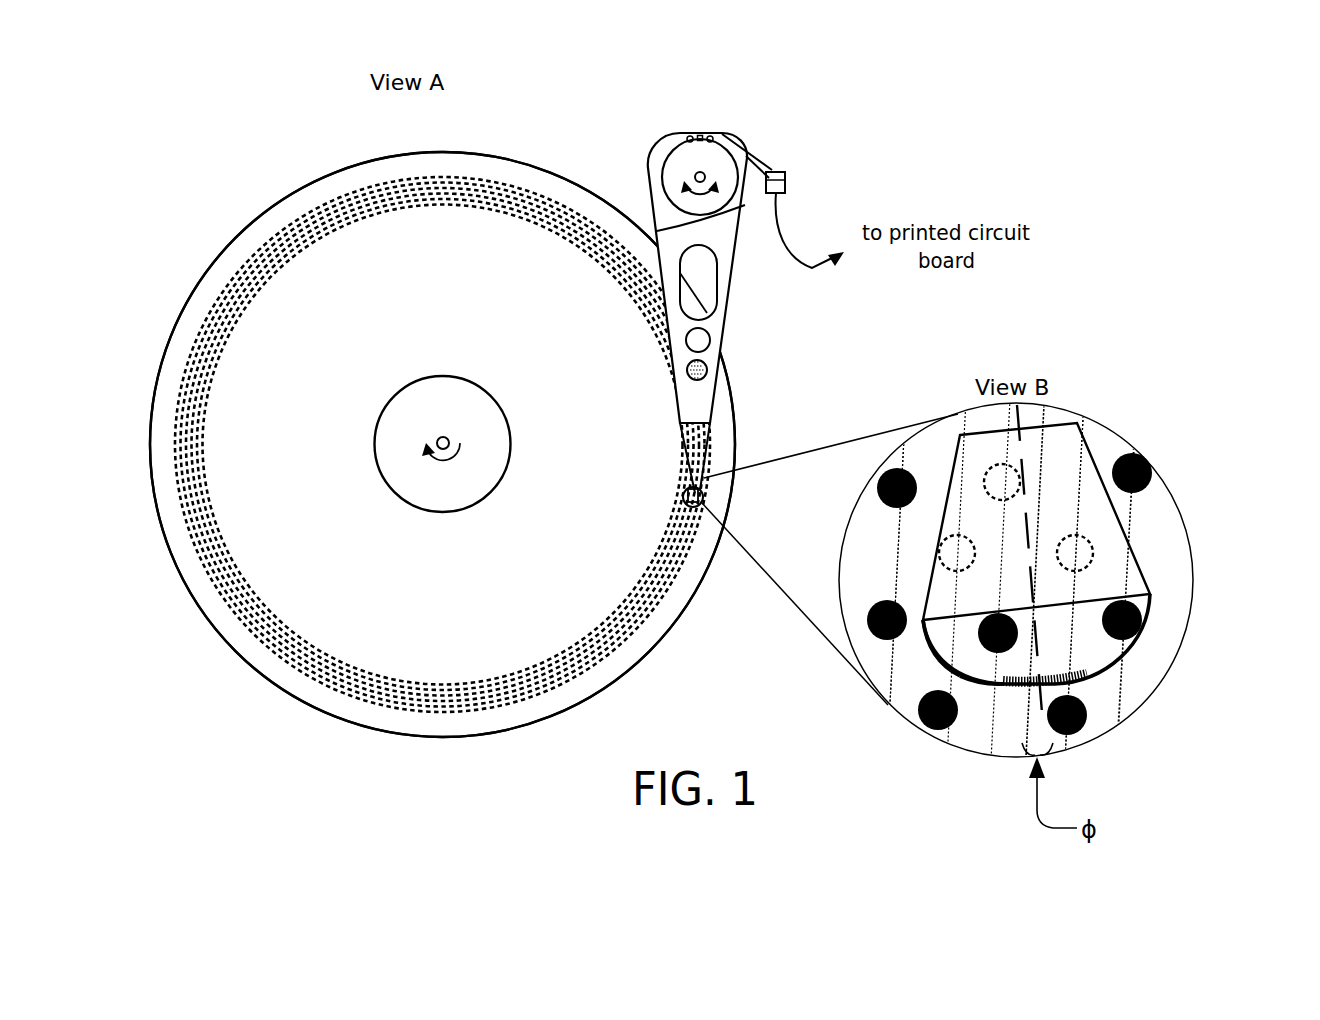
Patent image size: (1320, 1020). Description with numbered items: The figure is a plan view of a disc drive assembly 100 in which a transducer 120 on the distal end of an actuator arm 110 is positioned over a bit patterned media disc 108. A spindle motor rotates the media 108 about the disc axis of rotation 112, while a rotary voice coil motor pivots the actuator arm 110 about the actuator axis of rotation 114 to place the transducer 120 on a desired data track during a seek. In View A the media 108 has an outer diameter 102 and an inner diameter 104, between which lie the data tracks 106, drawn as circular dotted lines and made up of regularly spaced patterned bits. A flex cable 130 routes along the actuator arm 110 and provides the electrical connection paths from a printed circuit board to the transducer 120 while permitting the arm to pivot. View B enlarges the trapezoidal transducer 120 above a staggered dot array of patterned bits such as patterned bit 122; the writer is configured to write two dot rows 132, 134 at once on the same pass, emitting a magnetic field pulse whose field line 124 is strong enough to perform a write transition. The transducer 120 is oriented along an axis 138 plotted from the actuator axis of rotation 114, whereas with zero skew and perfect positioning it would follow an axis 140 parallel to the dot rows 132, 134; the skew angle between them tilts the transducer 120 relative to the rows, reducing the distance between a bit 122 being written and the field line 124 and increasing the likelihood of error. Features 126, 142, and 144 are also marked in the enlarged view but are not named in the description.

The disc drive assembly 100 is at (880, 145).
The outer diameter 102 is at (518, 162).
The inner diameter 104 is at (472, 382).
The data tracks 106 is at (335, 195).
The bit patterned media disc 108 is at (283, 688).
The actuator arm 110 is at (726, 312).
The disc axis of rotation 112 is at (452, 451).
The actuator axis of rotation 114 is at (698, 175).
The transducer 120 is at (708, 493).
The patterned bit 122 is at (1087, 675).
The field line 124 is at (1085, 723).
The slider body 126 is at (1150, 594).
The flex cable 130 is at (807, 265).
The dot row 132 is at (1070, 643).
The dot row 134 is at (1118, 690).
The transducer axis 138 is at (892, 527).
The axis parallel to dot rows 140 is at (1025, 710).
The write head 142 is at (1000, 690).
The read head 144 is at (933, 655).